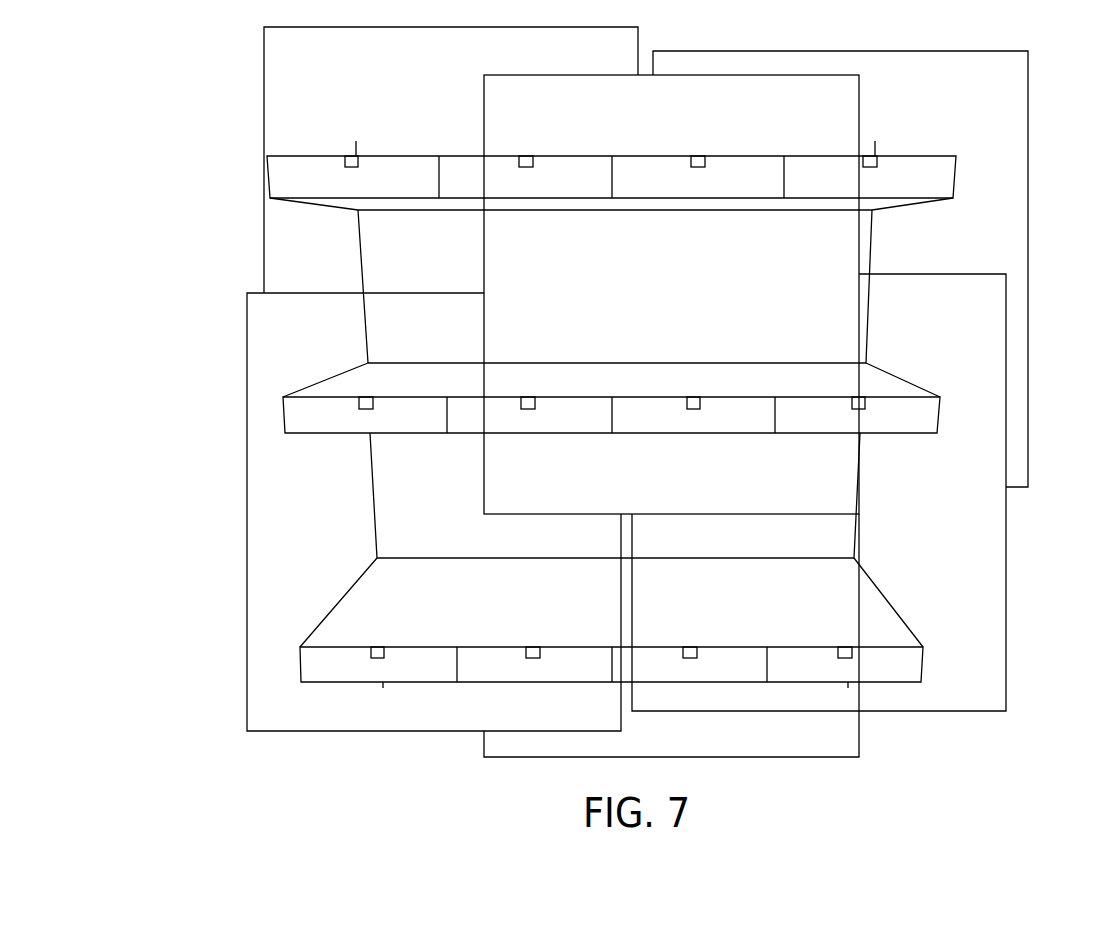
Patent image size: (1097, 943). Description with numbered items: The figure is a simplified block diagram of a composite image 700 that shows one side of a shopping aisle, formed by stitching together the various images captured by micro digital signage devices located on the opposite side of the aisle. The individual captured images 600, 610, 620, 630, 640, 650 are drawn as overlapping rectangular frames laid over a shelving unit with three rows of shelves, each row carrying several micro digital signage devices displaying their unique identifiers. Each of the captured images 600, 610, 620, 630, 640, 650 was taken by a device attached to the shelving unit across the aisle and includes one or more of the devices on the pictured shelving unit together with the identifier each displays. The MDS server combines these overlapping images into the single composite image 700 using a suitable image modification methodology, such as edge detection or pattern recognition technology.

The composite image 700 is at (145, 71).
The captured image 600 is at (264, 97).
The captured image 610 is at (484, 109).
The captured image 620 is at (1028, 97).
The captured image 630 is at (247, 673).
The captured image 640 is at (859, 730).
The captured image 650 is at (1006, 672).